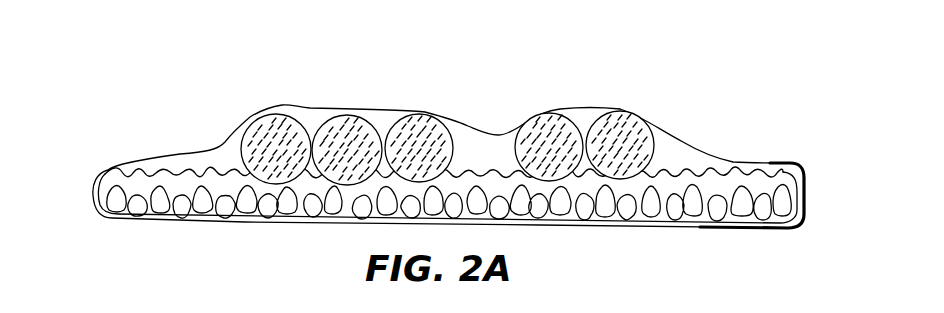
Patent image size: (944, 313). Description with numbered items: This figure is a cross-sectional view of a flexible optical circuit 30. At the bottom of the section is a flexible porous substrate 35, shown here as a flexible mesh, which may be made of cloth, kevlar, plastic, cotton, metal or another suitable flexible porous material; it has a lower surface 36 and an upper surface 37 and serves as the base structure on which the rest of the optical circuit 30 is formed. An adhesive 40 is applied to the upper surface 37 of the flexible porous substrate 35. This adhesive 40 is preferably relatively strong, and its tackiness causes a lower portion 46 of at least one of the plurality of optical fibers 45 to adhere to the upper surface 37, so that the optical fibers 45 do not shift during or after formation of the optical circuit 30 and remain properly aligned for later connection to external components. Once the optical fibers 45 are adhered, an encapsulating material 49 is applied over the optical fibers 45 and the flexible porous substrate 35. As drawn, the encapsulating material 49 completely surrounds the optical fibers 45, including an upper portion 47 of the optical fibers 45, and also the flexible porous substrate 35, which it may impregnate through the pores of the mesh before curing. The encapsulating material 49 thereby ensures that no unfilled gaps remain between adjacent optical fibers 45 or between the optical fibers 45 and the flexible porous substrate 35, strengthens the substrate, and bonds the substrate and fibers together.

The flexible optical circuit 30 is at (466, 145).
The flexible porous substrate 35 is at (118, 202).
The lower surface 36 is at (804, 222).
The upper surface 37 is at (803, 192).
The adhesive 40 is at (752, 165).
The optical fibers 45 is at (527, 148).
The lower portion 46 is at (652, 165).
The upper portion 47 is at (590, 118).
The encapsulating material 49 is at (283, 104).